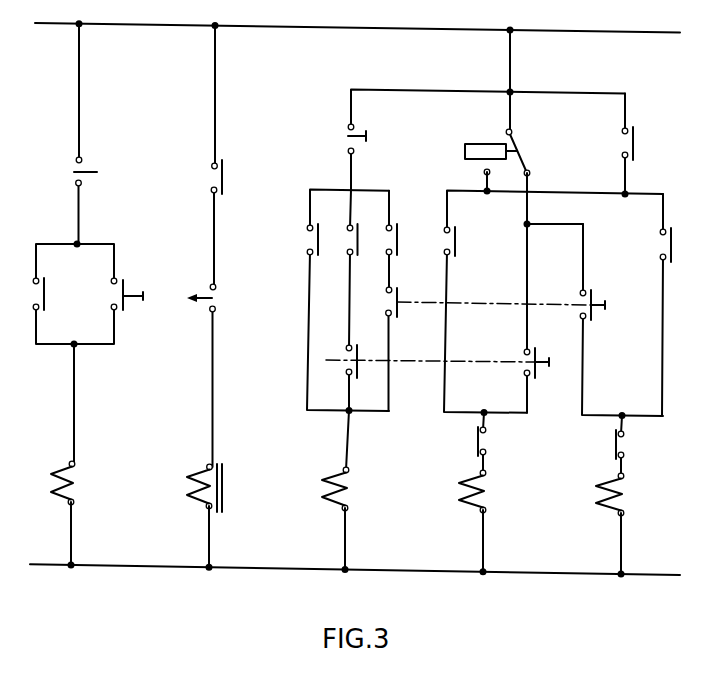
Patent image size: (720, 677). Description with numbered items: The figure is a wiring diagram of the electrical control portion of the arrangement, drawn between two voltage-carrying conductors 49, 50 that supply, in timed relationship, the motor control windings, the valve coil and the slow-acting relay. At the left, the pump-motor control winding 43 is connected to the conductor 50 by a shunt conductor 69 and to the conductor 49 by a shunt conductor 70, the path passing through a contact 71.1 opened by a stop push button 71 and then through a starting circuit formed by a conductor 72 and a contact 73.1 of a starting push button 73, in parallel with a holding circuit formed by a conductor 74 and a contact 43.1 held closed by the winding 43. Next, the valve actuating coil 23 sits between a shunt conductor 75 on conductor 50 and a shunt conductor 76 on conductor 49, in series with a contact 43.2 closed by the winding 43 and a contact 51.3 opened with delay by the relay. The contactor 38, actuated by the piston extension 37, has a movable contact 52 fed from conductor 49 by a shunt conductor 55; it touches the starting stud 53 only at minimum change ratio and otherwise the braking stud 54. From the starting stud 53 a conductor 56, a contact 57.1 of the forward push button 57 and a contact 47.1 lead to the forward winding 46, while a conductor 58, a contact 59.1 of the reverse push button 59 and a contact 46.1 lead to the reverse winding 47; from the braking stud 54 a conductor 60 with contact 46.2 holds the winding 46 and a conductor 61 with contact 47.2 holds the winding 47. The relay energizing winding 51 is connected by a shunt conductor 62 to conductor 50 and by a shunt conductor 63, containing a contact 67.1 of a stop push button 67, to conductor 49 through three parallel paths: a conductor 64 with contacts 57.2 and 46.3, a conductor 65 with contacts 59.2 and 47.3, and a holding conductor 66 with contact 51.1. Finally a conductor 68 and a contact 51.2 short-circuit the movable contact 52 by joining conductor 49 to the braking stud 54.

The electrical conductor 49 is at (128, 25).
The electrical conductor 50 is at (113, 566).
The shunt conductor 70 is at (79, 80).
The stop push button 71 is at (88, 170).
The contact 71.1 is at (75, 171).
The conductor 72 is at (115, 262).
The conductor 74 is at (38, 253).
The contact 43.1 is at (44, 292).
The starting push button 73 is at (127, 300).
The contact 73.1 is at (125, 310).
The winding 43 is at (60, 498).
The shunt conductor 69 is at (72, 525).
The shunt conductor 76 is at (217, 120).
The contact 43.2 is at (213, 182).
The contact 51.3 is at (207, 305).
The actuating coil 23 is at (196, 500).
The shunt conductor 75 is at (209, 545).
The shunt conductor 55 is at (510, 68).
The shunt conductor 63 is at (381, 89).
The stop push button 67 is at (357, 133).
The contact 67.1 is at (347, 133).
The conductor 68 is at (616, 92).
The contact 51.2 is at (633, 143).
The movable contact 52 is at (520, 158).
The starting contact stud 53 is at (531, 175).
The extension 37 is at (468, 146).
The contactor 38 is at (487, 121).
The braking contact stud 54 is at (485, 172).
The conductor 60 is at (448, 212).
The contact 46.2 is at (455, 245).
The conductor 56 is at (527, 275).
The contact 57.1 is at (530, 362).
The forward-running push button 57 is at (533, 362).
The conductor 58 is at (583, 270).
The contact 59.1 is at (582, 315).
The reverse-running push button 59 is at (597, 313).
The conductor 61 is at (662, 307).
The contact 47.2 is at (668, 248).
The conductor 66 is at (310, 305).
The contact 51.1 is at (318, 240).
The conductor 64 is at (350, 287).
The contact 46.3 is at (357, 240).
The contact 57.2 is at (355, 360).
The conductor 65 is at (387, 338).
The contact 47.3 is at (395, 240).
The contact 59.2 is at (393, 300).
The energizing winding 51 is at (323, 480).
The shunt conductor 62 is at (345, 535).
The contact 47.1 is at (485, 443).
The winding 46 is at (468, 513).
The contact 46.1 is at (622, 445).
The winding 47 is at (603, 513).